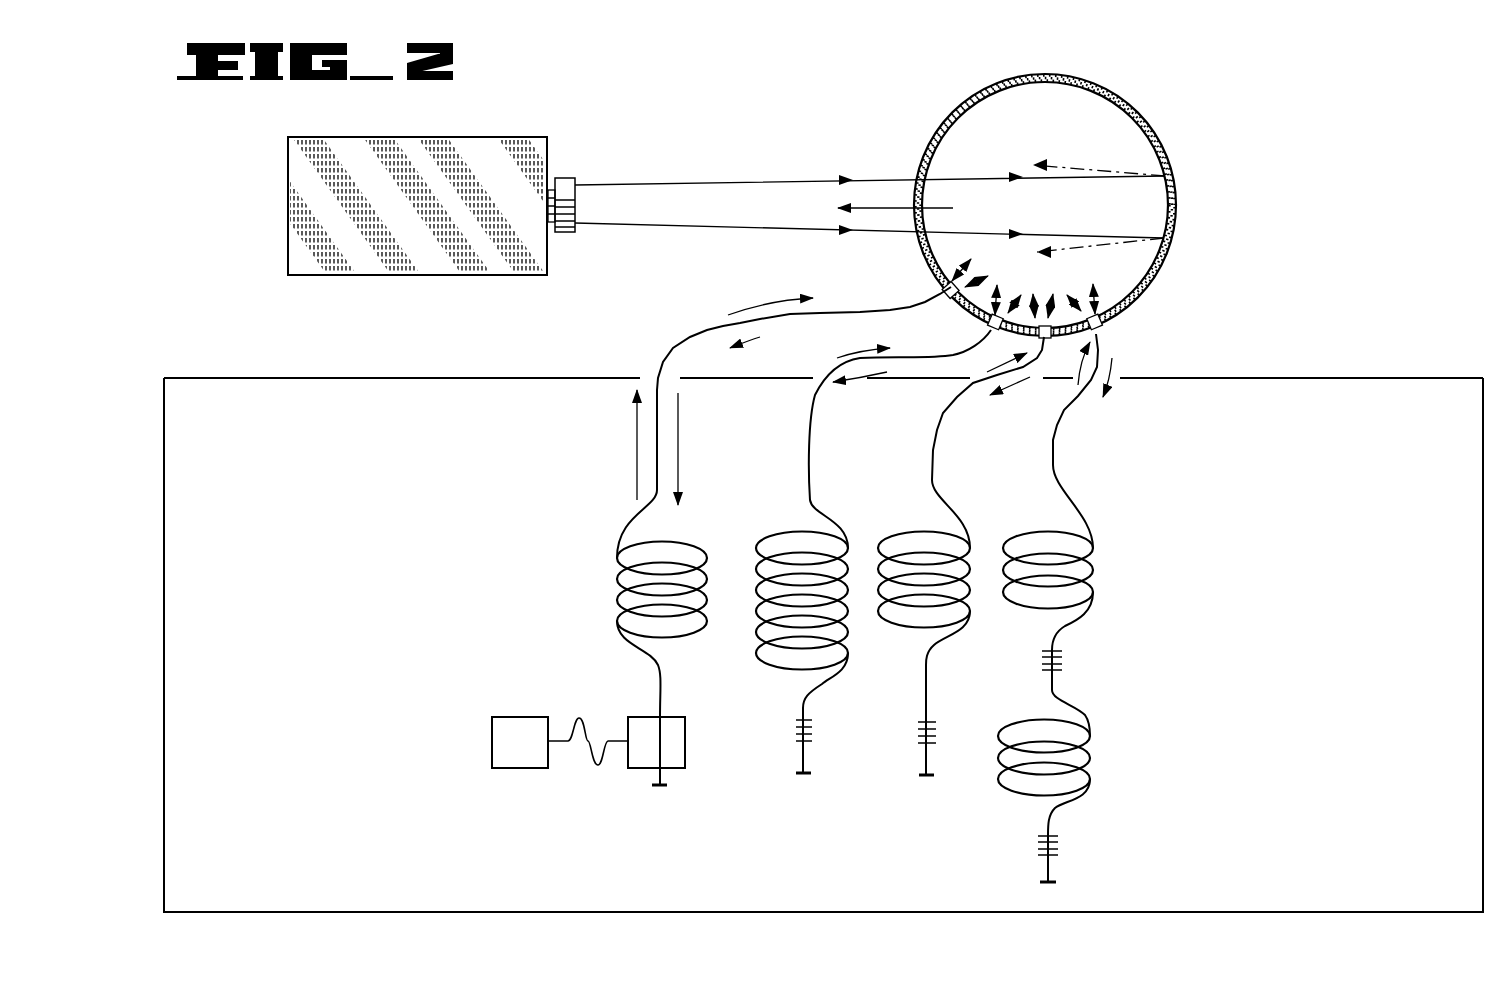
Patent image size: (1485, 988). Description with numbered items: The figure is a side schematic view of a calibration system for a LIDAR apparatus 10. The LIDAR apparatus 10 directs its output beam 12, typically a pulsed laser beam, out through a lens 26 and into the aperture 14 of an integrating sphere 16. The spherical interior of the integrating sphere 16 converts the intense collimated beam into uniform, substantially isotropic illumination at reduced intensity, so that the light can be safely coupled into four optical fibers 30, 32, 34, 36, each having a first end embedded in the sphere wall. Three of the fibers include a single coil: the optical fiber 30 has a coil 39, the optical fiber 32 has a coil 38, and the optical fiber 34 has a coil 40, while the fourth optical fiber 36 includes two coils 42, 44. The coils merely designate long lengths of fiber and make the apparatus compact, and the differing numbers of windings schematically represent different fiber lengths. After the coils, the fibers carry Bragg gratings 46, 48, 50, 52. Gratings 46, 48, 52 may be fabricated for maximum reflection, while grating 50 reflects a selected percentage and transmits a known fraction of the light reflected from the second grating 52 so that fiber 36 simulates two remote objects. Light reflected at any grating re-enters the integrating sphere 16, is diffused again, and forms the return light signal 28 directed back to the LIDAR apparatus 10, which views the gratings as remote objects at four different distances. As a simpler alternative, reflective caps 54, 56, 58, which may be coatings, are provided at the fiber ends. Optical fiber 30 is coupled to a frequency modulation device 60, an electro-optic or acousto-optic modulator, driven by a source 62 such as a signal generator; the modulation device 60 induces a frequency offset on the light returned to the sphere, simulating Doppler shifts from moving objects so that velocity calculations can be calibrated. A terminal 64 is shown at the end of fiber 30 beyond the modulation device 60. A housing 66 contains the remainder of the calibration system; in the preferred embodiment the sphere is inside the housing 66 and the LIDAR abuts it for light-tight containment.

The LIDAR apparatus 10 is at (447, 148).
The output beam 12 is at (689, 178).
The aperture 14 is at (918, 196).
The integrating sphere 16 is at (929, 142).
The lens 26 is at (566, 182).
The return light signal 28 is at (898, 210).
The optical fiber 30 is at (900, 309).
The optical fiber 32 is at (950, 356).
The optical fiber 34 is at (952, 398).
The optical fiber 36 is at (1077, 408).
The coil 38 is at (787, 531).
The coil 39 is at (615, 540).
The coil 40 is at (918, 531).
The coil 42 is at (1043, 531).
The coil 44 is at (1040, 720).
The Bragg grating 46 is at (818, 737).
The Bragg grating 48 is at (940, 733).
The Bragg grating 50 is at (1066, 660).
The Bragg grating 52 is at (1058, 843).
The reflective cap 54 is at (806, 777).
The reflective cap 56 is at (925, 777).
The reflective cap 58 is at (1047, 889).
The frequency modulation device 60 is at (677, 733).
The source 62 is at (520, 733).
The fiber end terminal 64 is at (656, 792).
The housing 66 is at (1418, 378).